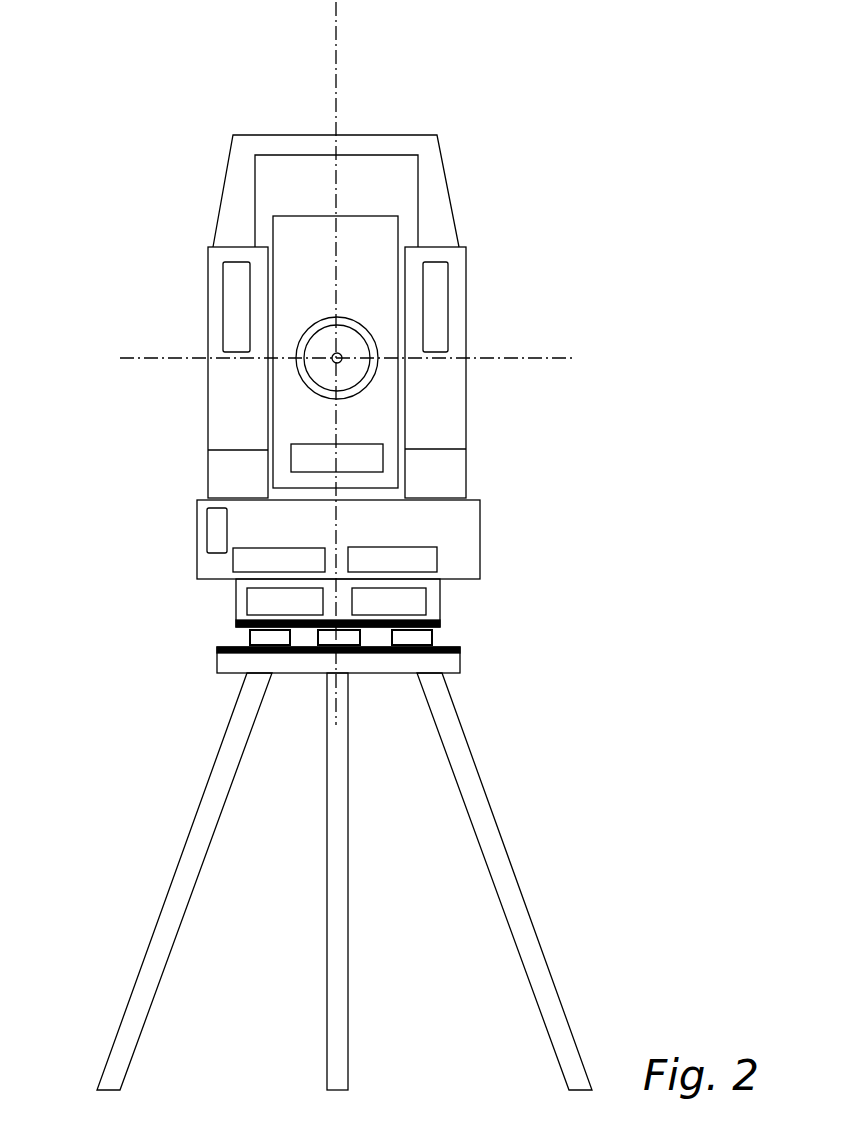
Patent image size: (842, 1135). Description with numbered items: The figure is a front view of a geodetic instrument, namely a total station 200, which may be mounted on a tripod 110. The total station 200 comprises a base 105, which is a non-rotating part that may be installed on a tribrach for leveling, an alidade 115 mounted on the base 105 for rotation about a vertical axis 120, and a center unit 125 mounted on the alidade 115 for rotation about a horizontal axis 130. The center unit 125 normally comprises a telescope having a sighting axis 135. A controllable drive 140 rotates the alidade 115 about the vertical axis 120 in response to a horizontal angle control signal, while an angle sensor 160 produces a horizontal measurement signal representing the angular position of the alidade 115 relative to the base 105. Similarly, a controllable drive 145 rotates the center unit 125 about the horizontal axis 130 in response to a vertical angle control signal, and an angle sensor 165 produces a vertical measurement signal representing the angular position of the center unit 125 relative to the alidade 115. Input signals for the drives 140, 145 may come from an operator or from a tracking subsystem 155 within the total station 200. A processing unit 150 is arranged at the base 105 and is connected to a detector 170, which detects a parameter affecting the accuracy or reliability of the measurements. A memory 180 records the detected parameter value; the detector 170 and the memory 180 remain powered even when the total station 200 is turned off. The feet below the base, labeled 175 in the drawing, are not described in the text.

The total station 200 is at (116, 80).
The base 105 is at (441, 597).
The tripod 110 is at (511, 864).
The alidade 115 is at (481, 515).
The vertical axis 120 is at (340, 45).
The center unit 125 is at (290, 232).
The horizontal axis 130 is at (548, 358).
The sighting axis 135 is at (340, 362).
The controllable drive 140 is at (238, 558).
The controllable drive 145 is at (240, 283).
The processing unit 150 is at (252, 605).
The tracking subsystem 155 is at (383, 458).
The angle sensor 160 is at (437, 556).
The angle sensor 165 is at (448, 277).
The detector 170 is at (210, 528).
The leveling screws 175 is at (450, 637).
The memory 180 is at (360, 607).